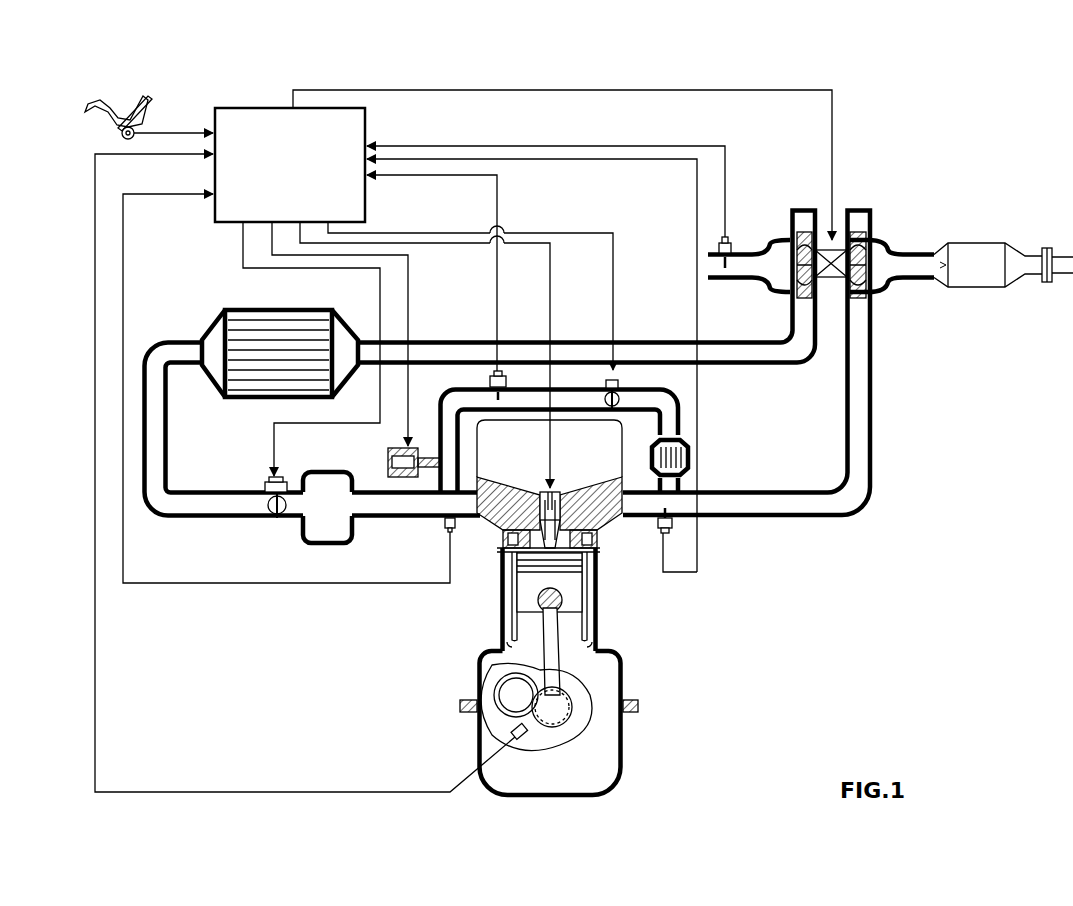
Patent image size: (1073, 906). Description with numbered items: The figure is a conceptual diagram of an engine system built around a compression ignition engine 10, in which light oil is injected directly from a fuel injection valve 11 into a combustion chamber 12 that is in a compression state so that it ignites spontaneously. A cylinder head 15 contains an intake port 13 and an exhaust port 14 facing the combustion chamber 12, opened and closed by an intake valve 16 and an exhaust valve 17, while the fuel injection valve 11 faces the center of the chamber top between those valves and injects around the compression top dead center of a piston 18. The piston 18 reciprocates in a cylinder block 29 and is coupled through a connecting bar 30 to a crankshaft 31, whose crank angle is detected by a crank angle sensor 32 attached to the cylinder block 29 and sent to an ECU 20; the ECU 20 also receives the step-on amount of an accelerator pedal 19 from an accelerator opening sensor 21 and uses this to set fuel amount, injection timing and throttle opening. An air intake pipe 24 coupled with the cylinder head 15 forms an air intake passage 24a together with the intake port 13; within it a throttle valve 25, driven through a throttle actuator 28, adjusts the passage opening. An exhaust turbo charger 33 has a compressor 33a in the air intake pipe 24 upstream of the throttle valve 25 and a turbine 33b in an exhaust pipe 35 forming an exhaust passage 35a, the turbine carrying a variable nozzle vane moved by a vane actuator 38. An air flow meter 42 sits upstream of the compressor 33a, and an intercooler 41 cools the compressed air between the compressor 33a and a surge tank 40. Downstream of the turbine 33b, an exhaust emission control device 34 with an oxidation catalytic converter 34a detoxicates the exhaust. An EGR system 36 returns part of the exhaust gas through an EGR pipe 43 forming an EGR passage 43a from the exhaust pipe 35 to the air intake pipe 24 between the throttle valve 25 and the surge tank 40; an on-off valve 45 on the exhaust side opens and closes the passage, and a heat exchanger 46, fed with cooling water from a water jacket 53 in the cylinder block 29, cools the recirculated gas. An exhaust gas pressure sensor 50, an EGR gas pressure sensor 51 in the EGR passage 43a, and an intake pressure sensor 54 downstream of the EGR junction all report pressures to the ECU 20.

The engine 10 is at (692, 742).
The fuel injection valve 11 is at (555, 492).
The combustion chamber 12 is at (580, 562).
The intake port 13 is at (487, 505).
The exhaust port 14 is at (608, 505).
The cylinder head 15 is at (562, 430).
The intake valve 16 is at (503, 540).
The exhaust valve 17 is at (597, 540).
The piston 18 is at (505, 600).
The accelerator pedal 19 is at (150, 98).
The ECU 20 is at (268, 108).
The accelerator opening sensor 21 is at (136, 128).
The air intake pipe 24 is at (650, 340).
The air intake passage 24a is at (148, 425).
The throttle valve 25 is at (270, 518).
The throttle actuator 28 is at (270, 478).
The cylinder block 29 is at (618, 660).
The connecting bar 30 is at (494, 680).
The crankshaft 31 is at (560, 712).
The crank angle sensor 32 is at (522, 742).
The exhaust turbo charger 33 is at (827, 235).
The compressor 33a is at (788, 288).
The turbine 33b is at (866, 240).
The exhaust emission control device 34 is at (1003, 262).
The oxidation catalytic converter 34a is at (972, 290).
The exhaust pipe 35 is at (770, 490).
The exhaust passage 35a is at (868, 440).
The EGR system 36 is at (386, 450).
The vane actuator 38 is at (840, 280).
The surge tank 40 is at (322, 545).
The intercooler 41 is at (275, 332).
The air flow meter 42 is at (730, 242).
The EGR pipe 43 is at (522, 387).
The EGR passage 43a is at (457, 402).
The on-off valve 45 is at (618, 402).
The heat exchanger 46 is at (676, 457).
The exhaust gas pressure sensor 50 is at (672, 530).
The EGR gas pressure sensor 51 is at (490, 373).
The water jacket 53 is at (592, 622).
The intake pressure sensor 54 is at (447, 532).